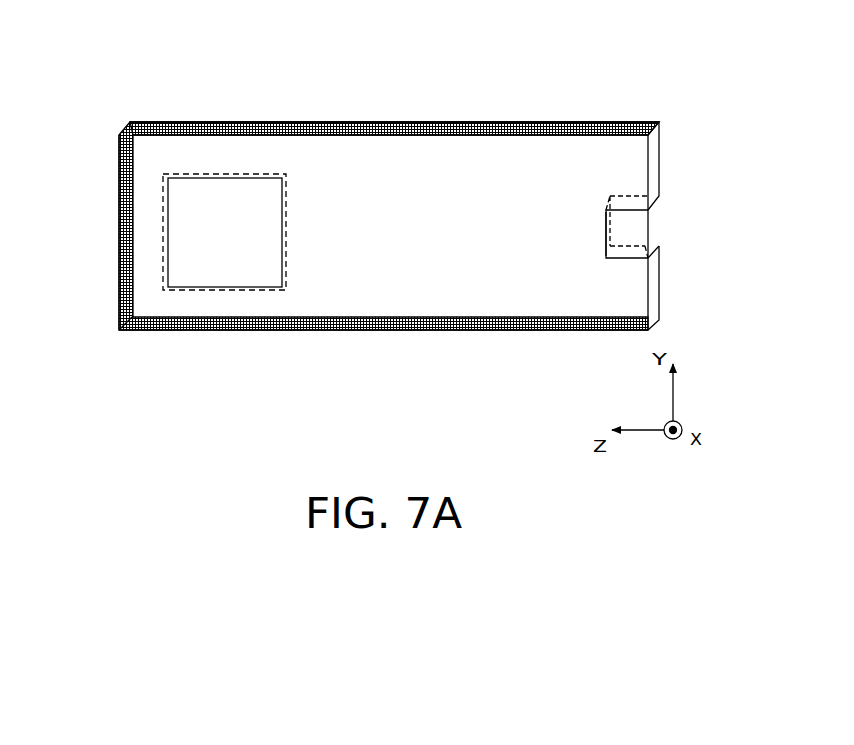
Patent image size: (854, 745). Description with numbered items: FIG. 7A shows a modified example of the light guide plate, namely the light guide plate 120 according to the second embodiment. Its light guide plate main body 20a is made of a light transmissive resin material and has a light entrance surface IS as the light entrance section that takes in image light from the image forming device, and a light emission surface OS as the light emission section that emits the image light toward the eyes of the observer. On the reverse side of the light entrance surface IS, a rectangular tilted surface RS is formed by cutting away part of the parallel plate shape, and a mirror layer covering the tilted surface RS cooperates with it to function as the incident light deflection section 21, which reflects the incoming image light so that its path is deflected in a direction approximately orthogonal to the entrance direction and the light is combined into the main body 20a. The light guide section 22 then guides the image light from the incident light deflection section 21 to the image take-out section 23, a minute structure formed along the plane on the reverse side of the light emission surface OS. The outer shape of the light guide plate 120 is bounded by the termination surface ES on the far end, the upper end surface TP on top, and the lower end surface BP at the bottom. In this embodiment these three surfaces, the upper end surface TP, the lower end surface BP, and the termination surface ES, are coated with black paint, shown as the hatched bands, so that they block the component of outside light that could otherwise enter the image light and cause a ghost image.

The light guide plate 120 is at (401, 204).
The light guide plate main body 20a is at (361, 213).
The light guide section 22 is at (404, 121).
The image take-out section 23 is at (170, 188).
The incident light deflection section 21 is at (640, 217).
The upper end surface TP is at (370, 121).
The lower end surface BP is at (411, 332).
The termination surface ES is at (119, 195).
The light emission surface OS is at (185, 226).
The tilted surface RS is at (607, 199).
The light entrance surface IS is at (637, 226).